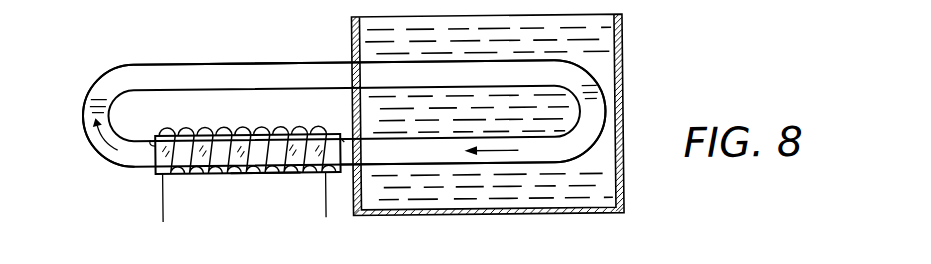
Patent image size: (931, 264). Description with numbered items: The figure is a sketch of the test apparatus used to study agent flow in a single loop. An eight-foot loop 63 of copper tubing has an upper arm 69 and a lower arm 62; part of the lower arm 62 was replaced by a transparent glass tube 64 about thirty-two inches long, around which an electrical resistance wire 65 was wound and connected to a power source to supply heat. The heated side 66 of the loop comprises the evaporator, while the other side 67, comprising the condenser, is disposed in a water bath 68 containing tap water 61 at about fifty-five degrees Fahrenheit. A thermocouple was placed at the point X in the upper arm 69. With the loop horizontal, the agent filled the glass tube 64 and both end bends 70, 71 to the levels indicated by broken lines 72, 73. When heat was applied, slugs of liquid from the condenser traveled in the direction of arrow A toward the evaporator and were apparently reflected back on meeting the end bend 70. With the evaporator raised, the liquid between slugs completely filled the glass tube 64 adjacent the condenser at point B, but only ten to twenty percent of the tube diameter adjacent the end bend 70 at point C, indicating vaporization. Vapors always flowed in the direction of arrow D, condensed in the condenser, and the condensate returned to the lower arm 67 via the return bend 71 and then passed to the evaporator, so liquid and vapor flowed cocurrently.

The tap water 61 is at (490, 194).
The lower arm 62 is at (137, 165).
The loop 63 is at (190, 62).
The transparent glass tube 64 is at (187, 178).
The electrical resistance wire 65 is at (217, 176).
The heated side 66 is at (263, 172).
The other side 67 is at (425, 164).
The water bath 68 is at (445, 211).
The upper arm 69 is at (293, 62).
The end bend 70 is at (103, 157).
The end bend 71 is at (598, 140).
The broken line 72 is at (117, 91).
The broken line 73 is at (585, 83).
The arrow A is at (508, 153).
The point B is at (343, 140).
The point C is at (150, 138).
The arrow D is at (88, 134).